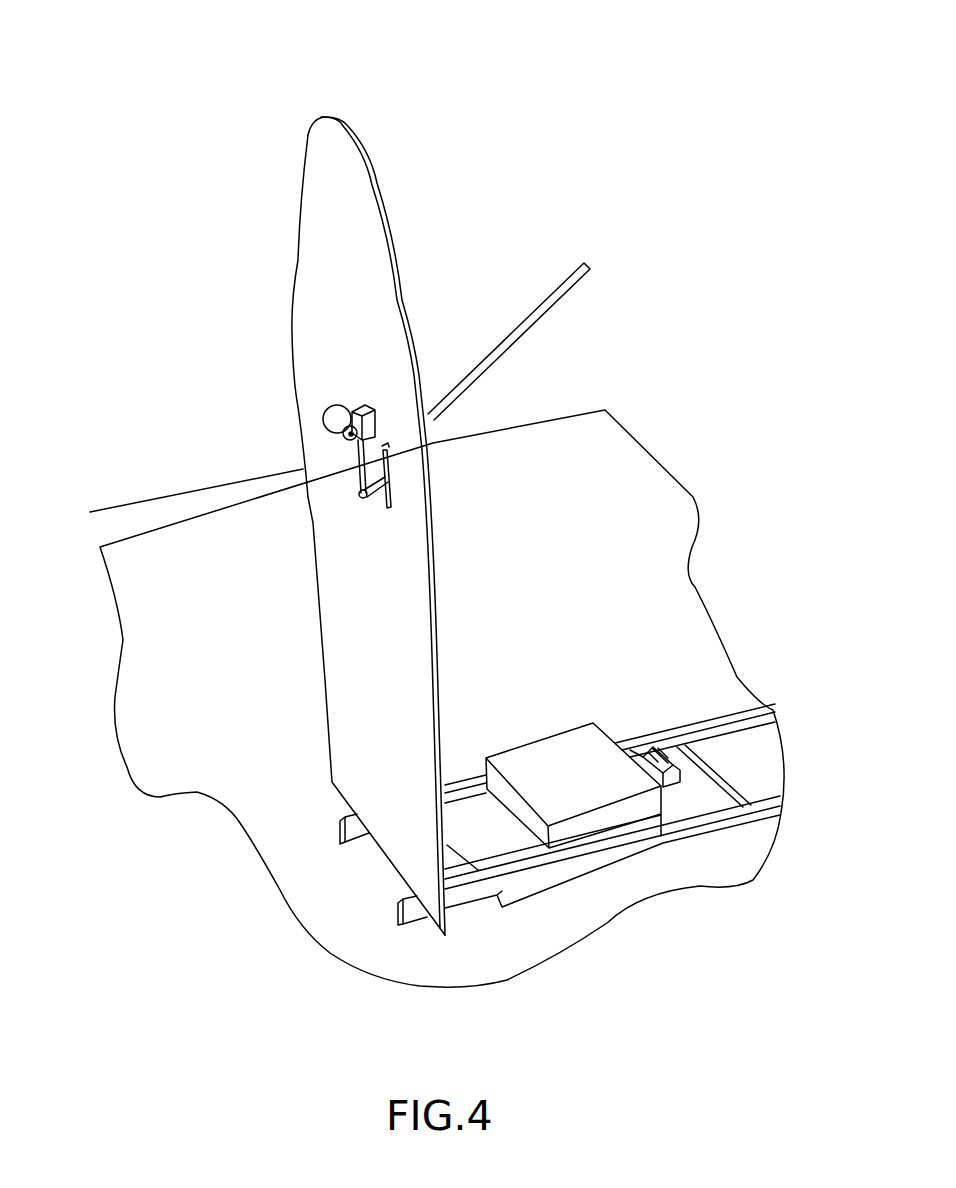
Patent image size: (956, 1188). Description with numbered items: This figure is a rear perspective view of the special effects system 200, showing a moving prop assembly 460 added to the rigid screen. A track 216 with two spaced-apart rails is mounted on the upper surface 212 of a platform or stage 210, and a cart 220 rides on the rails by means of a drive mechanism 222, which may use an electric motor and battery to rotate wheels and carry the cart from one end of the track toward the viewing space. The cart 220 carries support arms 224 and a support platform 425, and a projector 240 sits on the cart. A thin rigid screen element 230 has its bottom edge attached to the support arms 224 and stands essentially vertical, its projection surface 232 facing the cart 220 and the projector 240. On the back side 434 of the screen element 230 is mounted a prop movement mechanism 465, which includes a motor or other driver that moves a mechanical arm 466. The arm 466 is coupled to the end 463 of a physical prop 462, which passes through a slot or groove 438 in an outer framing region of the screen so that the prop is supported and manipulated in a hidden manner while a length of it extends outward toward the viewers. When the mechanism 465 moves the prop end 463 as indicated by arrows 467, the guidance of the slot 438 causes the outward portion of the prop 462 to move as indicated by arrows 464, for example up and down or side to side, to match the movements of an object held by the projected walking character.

The special effects system 200 is at (157, 268).
The platform or stage 210 is at (158, 488).
The upper surface 212 is at (188, 522).
The track 216 is at (741, 708).
The cart 220 is at (591, 897).
The drive mechanism 222 is at (599, 873).
The support arms 224 is at (467, 893).
The screen element 230 is at (347, 468).
The projection surface 232 is at (370, 152).
The projector 240 is at (546, 731).
The support platform 425 is at (553, 842).
The back side 434 is at (315, 226).
The slot or groove 438 is at (394, 444).
The moving prop assembly 460 is at (344, 435).
The physical prop 462 is at (547, 333).
The prop end 463 is at (372, 489).
The prop movement arrows 464 is at (450, 348).
The prop movement mechanism 465 is at (353, 390).
The mechanical arm 466 is at (350, 438).
The prop end movement arrows 467 is at (378, 511).